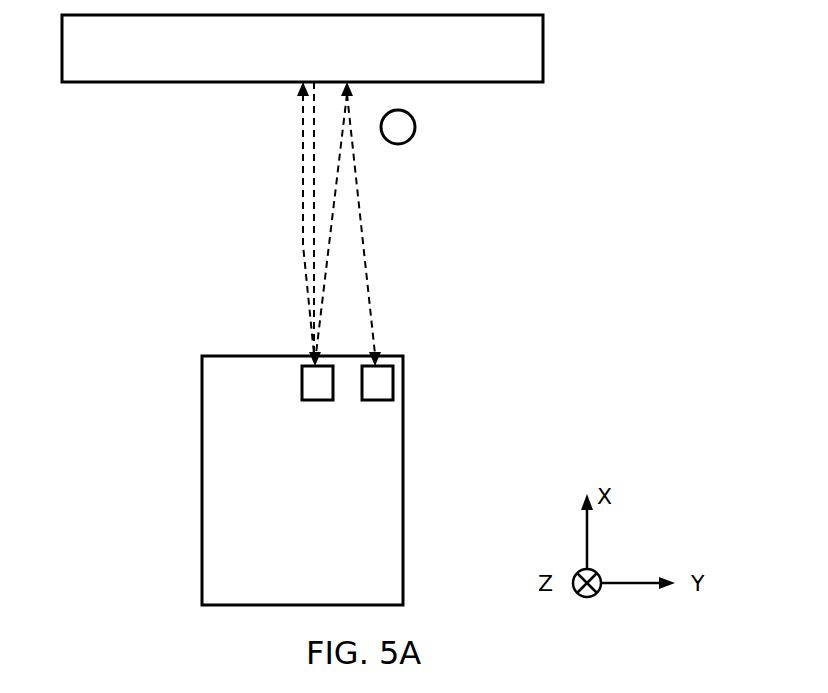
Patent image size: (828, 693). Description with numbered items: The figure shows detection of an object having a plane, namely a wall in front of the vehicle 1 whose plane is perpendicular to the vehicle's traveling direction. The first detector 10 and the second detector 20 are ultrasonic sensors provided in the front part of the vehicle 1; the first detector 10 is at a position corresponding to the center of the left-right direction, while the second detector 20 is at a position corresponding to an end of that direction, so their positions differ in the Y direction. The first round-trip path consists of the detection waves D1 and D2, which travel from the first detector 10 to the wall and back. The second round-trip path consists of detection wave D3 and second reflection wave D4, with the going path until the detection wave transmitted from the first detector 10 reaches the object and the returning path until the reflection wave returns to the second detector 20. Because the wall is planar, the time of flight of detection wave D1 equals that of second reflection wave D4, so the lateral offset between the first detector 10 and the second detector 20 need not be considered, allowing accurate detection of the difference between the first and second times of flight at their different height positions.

The vehicle 1 is at (202, 496).
The first detector 10 is at (302, 387).
The second detector 20 is at (393, 379).
The detection wave D1 is at (311, 245).
The detection wave D2 is at (306, 177).
The detection wave D3 is at (335, 210).
The second reflection wave D4 is at (362, 250).